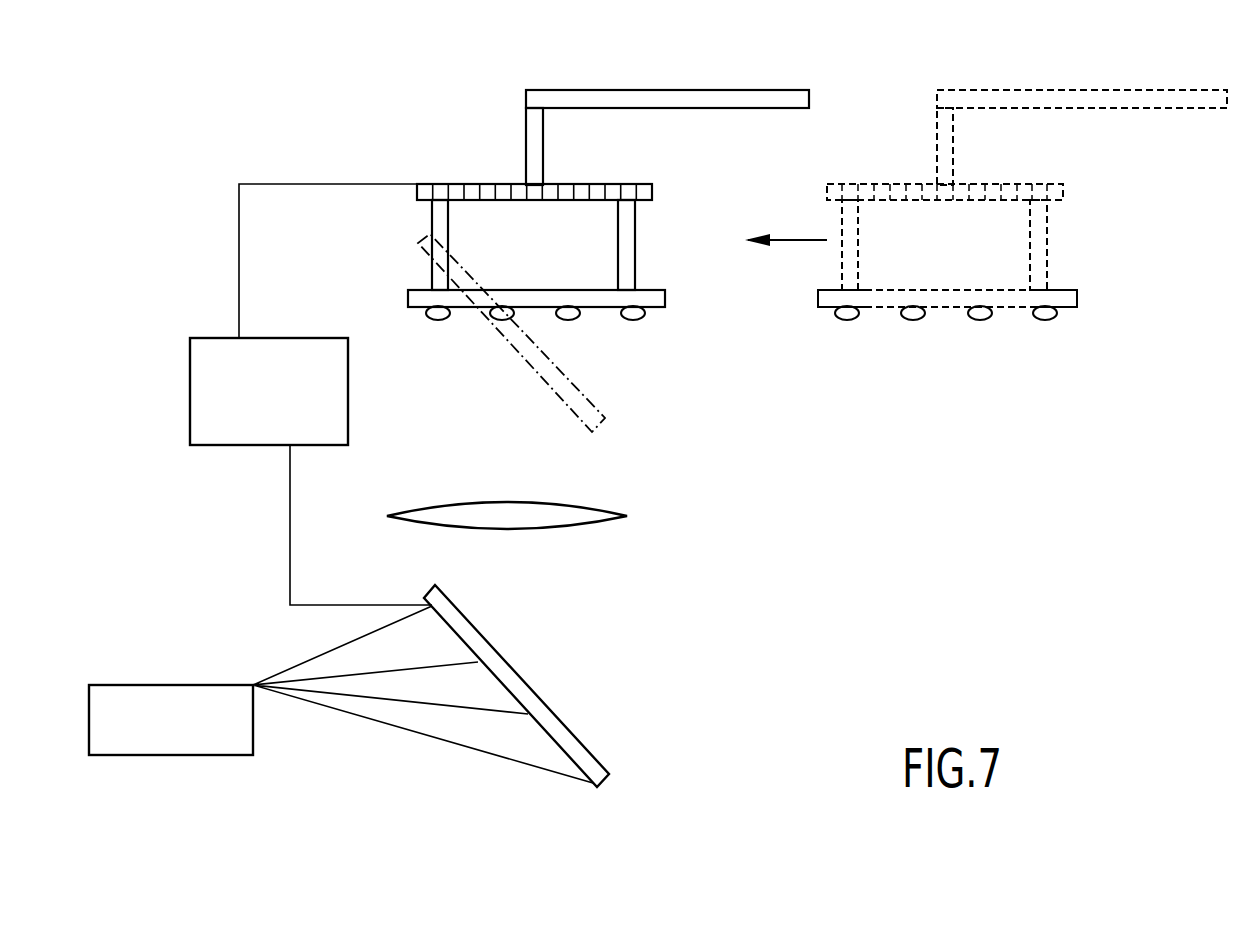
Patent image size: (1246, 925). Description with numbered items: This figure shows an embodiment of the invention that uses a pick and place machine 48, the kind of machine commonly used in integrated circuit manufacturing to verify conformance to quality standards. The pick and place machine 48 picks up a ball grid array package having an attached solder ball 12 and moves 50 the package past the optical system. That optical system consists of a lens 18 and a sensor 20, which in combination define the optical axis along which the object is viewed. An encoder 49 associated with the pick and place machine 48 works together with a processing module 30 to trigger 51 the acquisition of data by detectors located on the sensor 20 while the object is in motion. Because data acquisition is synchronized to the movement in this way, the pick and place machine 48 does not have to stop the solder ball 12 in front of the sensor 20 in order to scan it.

The pick and place machine 48 is at (668, 90).
The encoder 49 is at (447, 184).
The solder ball 12 is at (665, 297).
The movement of the BGA 50 is at (795, 240).
The trigger 51 is at (190, 392).
The lens 18 is at (627, 516).
The sensor 20 is at (586, 745).
The processing module 30 is at (172, 685).